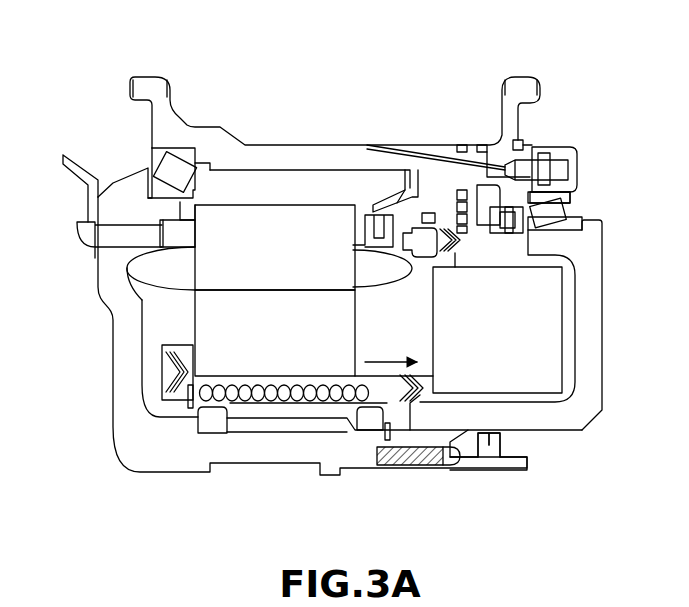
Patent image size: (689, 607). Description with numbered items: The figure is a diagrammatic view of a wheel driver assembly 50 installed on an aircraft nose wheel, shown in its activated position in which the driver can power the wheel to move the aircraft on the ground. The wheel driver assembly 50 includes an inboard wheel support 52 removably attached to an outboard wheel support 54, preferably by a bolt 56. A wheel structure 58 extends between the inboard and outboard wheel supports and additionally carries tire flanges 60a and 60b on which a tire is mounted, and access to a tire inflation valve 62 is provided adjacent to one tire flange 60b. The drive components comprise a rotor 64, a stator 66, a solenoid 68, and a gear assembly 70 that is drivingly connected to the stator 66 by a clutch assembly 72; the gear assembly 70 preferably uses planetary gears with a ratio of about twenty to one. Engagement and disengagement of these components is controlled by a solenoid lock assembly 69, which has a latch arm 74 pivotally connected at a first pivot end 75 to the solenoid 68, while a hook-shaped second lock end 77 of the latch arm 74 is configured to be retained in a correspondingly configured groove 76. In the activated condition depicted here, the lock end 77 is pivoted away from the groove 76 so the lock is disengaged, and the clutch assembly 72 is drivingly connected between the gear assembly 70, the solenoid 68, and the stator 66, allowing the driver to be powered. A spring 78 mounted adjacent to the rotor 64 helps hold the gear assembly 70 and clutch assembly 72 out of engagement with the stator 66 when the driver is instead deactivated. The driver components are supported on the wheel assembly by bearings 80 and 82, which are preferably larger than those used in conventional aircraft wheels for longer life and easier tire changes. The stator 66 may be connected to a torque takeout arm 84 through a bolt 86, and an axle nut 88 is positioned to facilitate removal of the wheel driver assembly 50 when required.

The wheel driver assembly 50 is at (96, 338).
The inboard wheel support 52 is at (167, 457).
The outboard wheel support 54 is at (590, 350).
The bolt 56 is at (417, 455).
The wheel structure 58 is at (250, 152).
The tire flange 60a is at (147, 85).
The tire flange 60b is at (530, 78).
The tire inflation valve 62 is at (558, 170).
The rotor 64 is at (267, 340).
The stator 66 is at (267, 259).
The solenoid 68 is at (373, 240).
The solenoid lock assembly 69 is at (413, 174).
The gear assembly 70 is at (478, 344).
The clutch assembly 72 is at (470, 245).
The latch arm 74 is at (397, 203).
The first pivot end 75 is at (378, 215).
The groove 76 is at (445, 212).
The lock end 77 is at (430, 215).
The spring 78 is at (267, 400).
The bearing 80 is at (210, 418).
The bearing 82 is at (170, 171).
The torque takeout arm 84 is at (78, 167).
The bolt 86 is at (102, 235).
The axle nut 88 is at (513, 465).